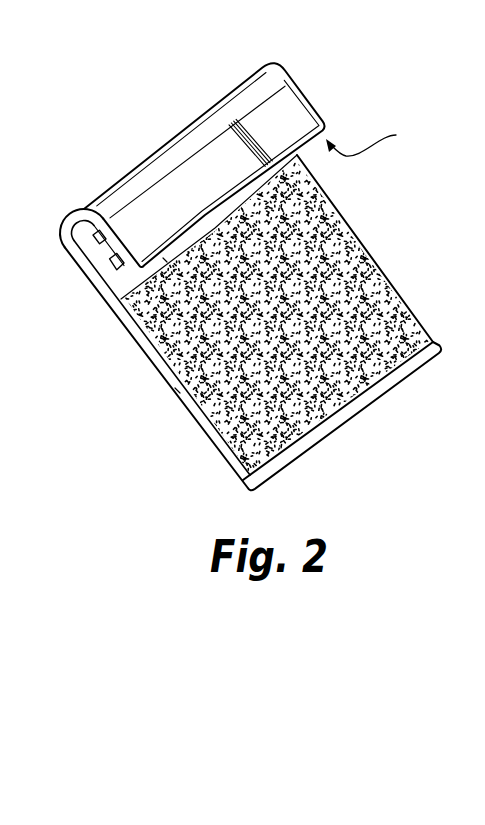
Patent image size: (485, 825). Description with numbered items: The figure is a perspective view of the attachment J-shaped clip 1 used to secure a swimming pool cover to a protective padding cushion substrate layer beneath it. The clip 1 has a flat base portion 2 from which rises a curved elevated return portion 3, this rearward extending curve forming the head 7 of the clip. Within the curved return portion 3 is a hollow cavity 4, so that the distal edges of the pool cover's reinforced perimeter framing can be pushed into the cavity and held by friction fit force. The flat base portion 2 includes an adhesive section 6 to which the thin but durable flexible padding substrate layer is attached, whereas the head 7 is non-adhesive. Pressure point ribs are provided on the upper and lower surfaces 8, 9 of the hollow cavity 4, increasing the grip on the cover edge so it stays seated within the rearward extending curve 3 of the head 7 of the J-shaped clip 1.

The J-shaped clip 1 is at (305, 63).
The flat base portion 2 is at (146, 357).
The curved elevated return portion 3 is at (122, 192).
The hollow cavity 4 is at (86, 233).
The adhesive section 6 is at (333, 248).
The head 7 is at (294, 100).
The upper surface 8 is at (370, 140).
The lower surface 9 is at (107, 266).